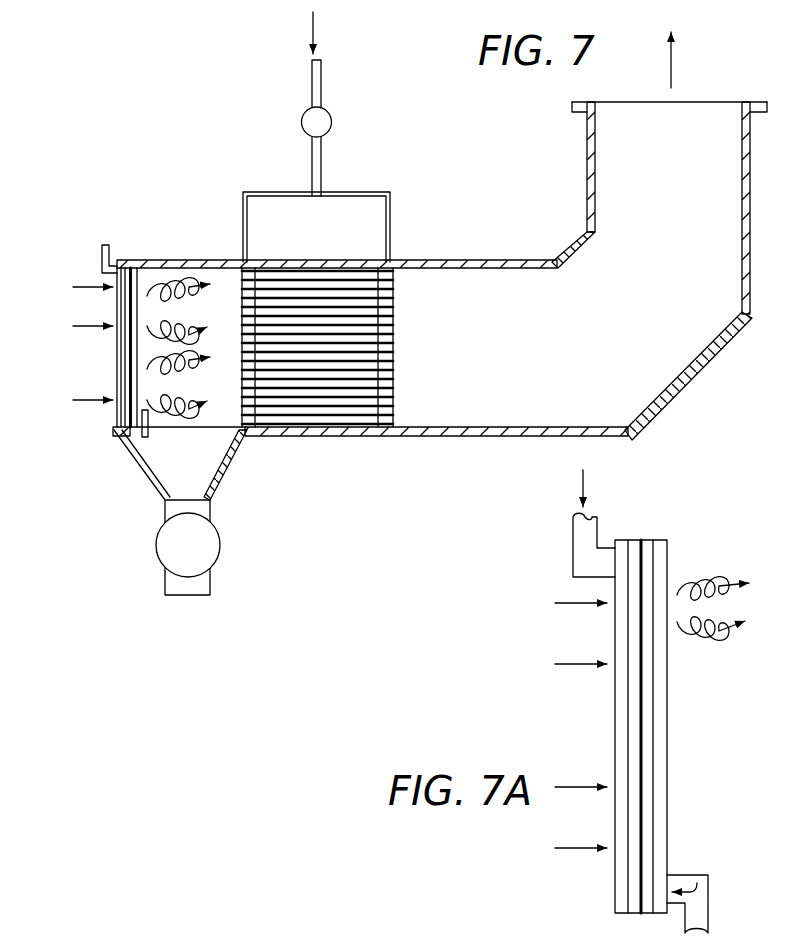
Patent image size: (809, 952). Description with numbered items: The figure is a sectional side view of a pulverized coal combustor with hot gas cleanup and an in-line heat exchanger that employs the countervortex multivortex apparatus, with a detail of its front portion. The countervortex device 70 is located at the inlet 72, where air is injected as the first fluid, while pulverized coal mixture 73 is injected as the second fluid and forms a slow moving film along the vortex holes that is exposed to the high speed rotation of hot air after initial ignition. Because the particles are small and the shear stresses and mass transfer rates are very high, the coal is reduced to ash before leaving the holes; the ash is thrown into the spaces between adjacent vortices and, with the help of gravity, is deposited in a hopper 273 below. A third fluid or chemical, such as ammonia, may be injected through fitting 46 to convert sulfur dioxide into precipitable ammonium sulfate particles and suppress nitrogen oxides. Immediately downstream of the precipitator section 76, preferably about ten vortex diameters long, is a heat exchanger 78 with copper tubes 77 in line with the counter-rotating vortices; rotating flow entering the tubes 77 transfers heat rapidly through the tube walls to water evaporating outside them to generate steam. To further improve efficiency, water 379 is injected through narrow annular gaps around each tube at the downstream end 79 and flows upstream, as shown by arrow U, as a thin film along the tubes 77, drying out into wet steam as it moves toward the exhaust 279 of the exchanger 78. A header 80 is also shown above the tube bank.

In FIG. 7, the fitting 46 is at (148, 420).
In FIG. 7A, the fitting 46 is at (700, 873).
In FIG. 7, the countervortex device 70 is at (113, 298).
In FIG. 7A, the countervortex device 70 is at (670, 555).
In FIG. 7, the inlet 72 is at (113, 362).
In FIG. 7A, the inlet 72 is at (607, 727).
In FIG. 7, the pulverized coal mixture 73 is at (104, 250).
In FIG. 7A, the pulverized coal mixture 73 is at (572, 557).
In FIG. 7, the precipitator section 76 is at (195, 275).
In FIG. 7, the copper tubes 77 is at (338, 420).
In FIG. 7, the heat exchanger 78 is at (286, 404).
In FIG. 7, the downstream end 79 is at (394, 409).
In FIG. 7, the header 80 is at (342, 284).
In FIG. 7, the hopper 273 is at (158, 490).
In FIG. 7, the exhaust 279 is at (671, 75).
In FIG. 7, the water 379 is at (322, 80).
In FIG. 7, the arrow U is at (398, 338).